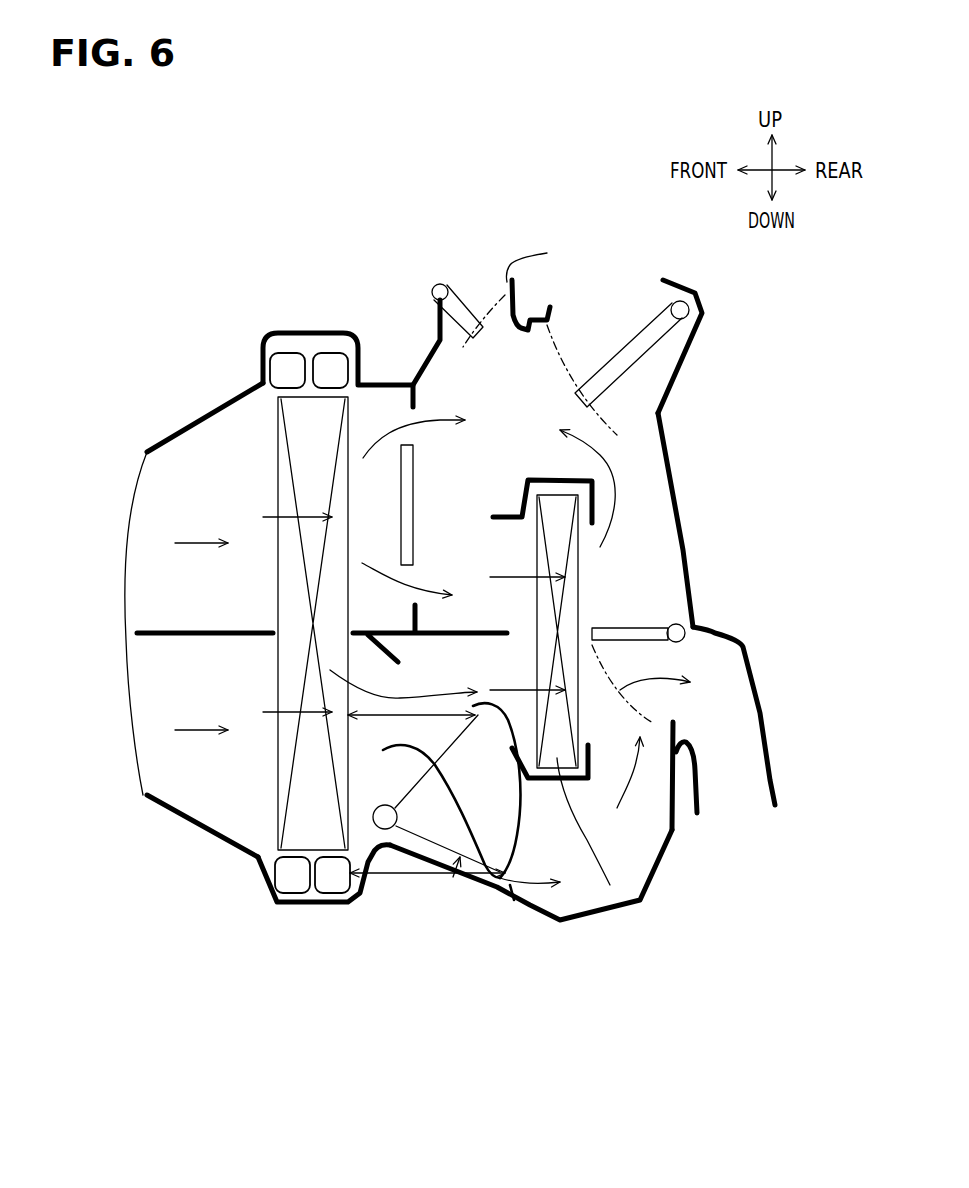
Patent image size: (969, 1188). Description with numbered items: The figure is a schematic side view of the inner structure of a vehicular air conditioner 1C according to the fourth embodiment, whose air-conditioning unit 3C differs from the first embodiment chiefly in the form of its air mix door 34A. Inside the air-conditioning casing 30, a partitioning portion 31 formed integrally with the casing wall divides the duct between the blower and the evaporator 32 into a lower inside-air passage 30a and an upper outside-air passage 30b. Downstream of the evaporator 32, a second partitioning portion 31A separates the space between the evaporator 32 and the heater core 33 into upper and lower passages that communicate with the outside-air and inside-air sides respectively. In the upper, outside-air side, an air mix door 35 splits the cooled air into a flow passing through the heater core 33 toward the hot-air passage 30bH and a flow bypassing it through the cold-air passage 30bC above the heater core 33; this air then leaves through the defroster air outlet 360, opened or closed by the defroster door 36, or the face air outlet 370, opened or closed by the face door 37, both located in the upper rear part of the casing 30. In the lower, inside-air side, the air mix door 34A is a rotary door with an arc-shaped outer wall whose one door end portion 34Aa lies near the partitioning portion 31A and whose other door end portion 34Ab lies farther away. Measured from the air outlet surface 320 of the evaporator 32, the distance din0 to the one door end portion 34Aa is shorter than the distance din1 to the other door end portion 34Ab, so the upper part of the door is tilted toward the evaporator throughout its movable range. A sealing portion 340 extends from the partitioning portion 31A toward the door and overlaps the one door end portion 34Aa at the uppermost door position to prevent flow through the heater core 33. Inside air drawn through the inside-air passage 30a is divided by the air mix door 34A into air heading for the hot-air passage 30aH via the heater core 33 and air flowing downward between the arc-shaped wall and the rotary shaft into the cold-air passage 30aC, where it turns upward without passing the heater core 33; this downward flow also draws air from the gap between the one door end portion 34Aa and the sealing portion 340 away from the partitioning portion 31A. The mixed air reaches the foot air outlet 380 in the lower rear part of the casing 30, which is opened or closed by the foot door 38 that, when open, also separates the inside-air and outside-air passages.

The vehicular air conditioner 1C is at (443, 260).
The air-conditioning unit 3C is at (350, 328).
The air-conditioning casing 30 is at (213, 837).
The inside-air passage 30a is at (188, 798).
The outside-air passage 30b is at (170, 458).
The cold-air passage 30bC is at (410, 420).
The hot-air passage 30bH is at (590, 576).
The hot-air passage 30aH is at (588, 727).
The cold-air passage 30aC is at (653, 890).
The partitioning portion 31 is at (173, 638).
The partitioning portion 31A is at (432, 615).
The evaporator 32 is at (273, 443).
The air outlet surface 320 is at (362, 782).
The heater core 33 is at (608, 850).
The air mix door 34A is at (455, 878).
The one door end portion 34Aa is at (520, 730).
The other door end portion 34Ab is at (510, 897).
The air mix door 35 is at (402, 440).
The defroster door 36 is at (455, 308).
The defroster air outlet 360 is at (540, 251).
The face door 37 is at (627, 363).
The face air outlet 370 is at (660, 275).
The foot door 38 is at (627, 632).
The sealing portion 340 is at (392, 650).
The foot air outlet 380 is at (673, 720).
The distance din0 is at (390, 718).
The distance din1 is at (407, 877).